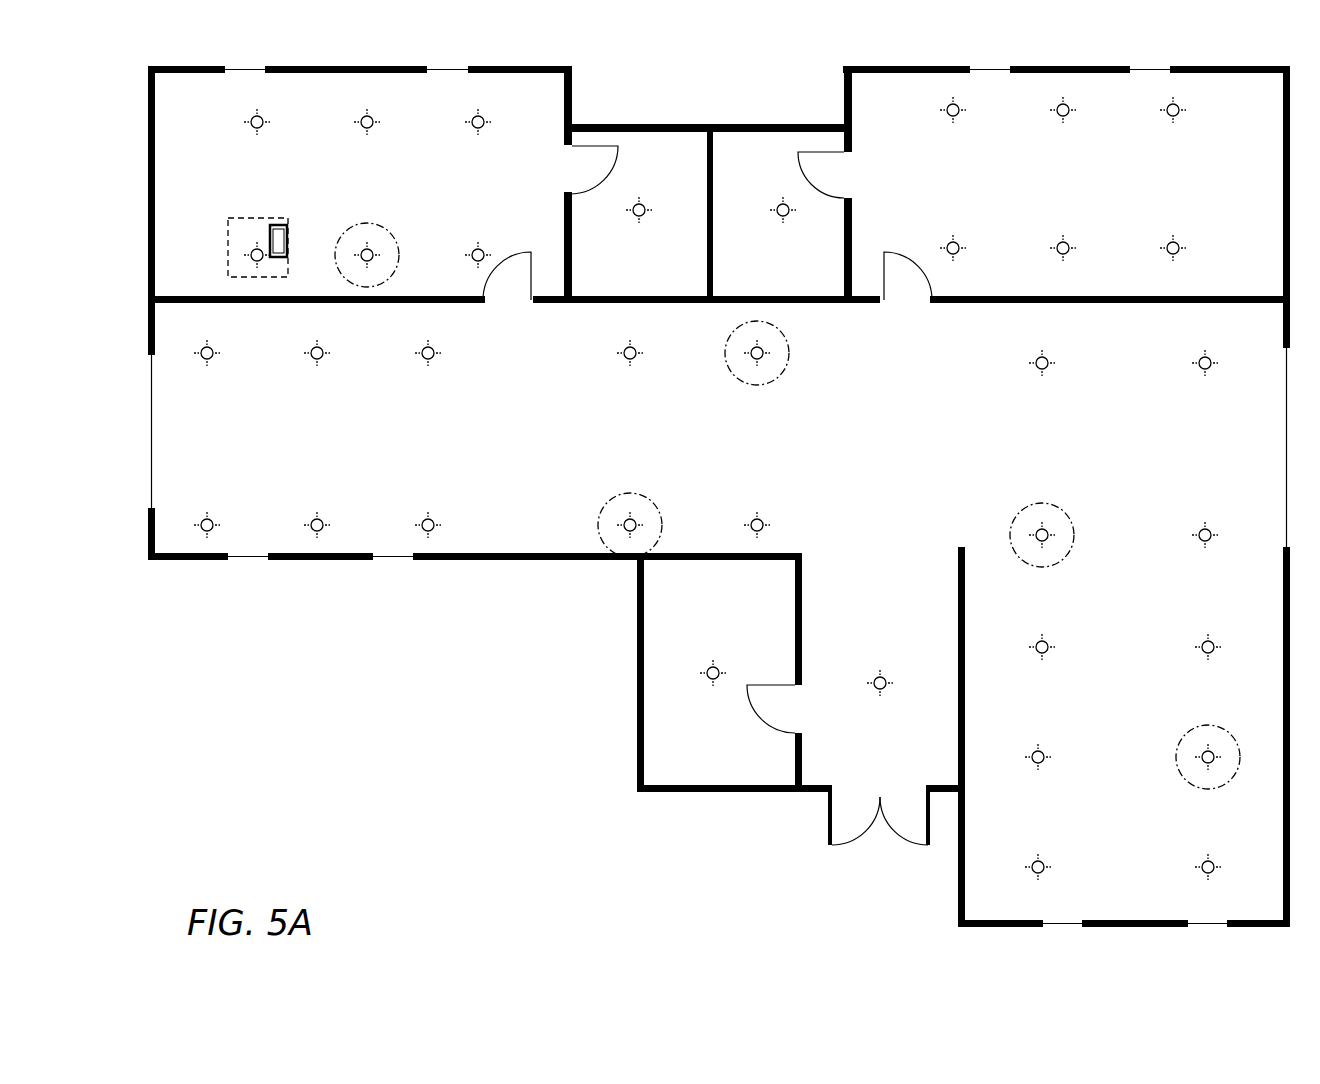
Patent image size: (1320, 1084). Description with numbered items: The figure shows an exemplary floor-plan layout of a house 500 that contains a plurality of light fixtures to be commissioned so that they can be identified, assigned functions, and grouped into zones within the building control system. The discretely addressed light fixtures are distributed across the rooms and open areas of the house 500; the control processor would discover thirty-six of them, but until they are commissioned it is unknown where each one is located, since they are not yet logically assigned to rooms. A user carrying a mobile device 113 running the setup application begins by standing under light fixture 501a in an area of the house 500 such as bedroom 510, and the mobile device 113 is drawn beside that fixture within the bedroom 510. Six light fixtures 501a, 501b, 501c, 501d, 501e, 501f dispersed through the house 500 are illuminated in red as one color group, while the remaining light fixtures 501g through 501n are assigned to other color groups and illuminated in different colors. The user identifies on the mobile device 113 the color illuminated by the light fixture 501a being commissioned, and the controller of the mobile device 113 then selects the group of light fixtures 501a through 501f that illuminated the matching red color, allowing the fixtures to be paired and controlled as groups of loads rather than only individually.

The house 500 is at (726, 84).
The bedroom 510 is at (331, 112).
The light fixture 501a is at (241, 218).
The mobile device 113 is at (277, 224).
The light fixture 501b is at (372, 224).
The light fixture 501c is at (1209, 725).
The light fixture 501d is at (1041, 503).
The light fixture 501e is at (633, 500).
The light fixture 501f is at (754, 368).
The light fixture 501g is at (1061, 120).
The light fixture 501n is at (1175, 120).